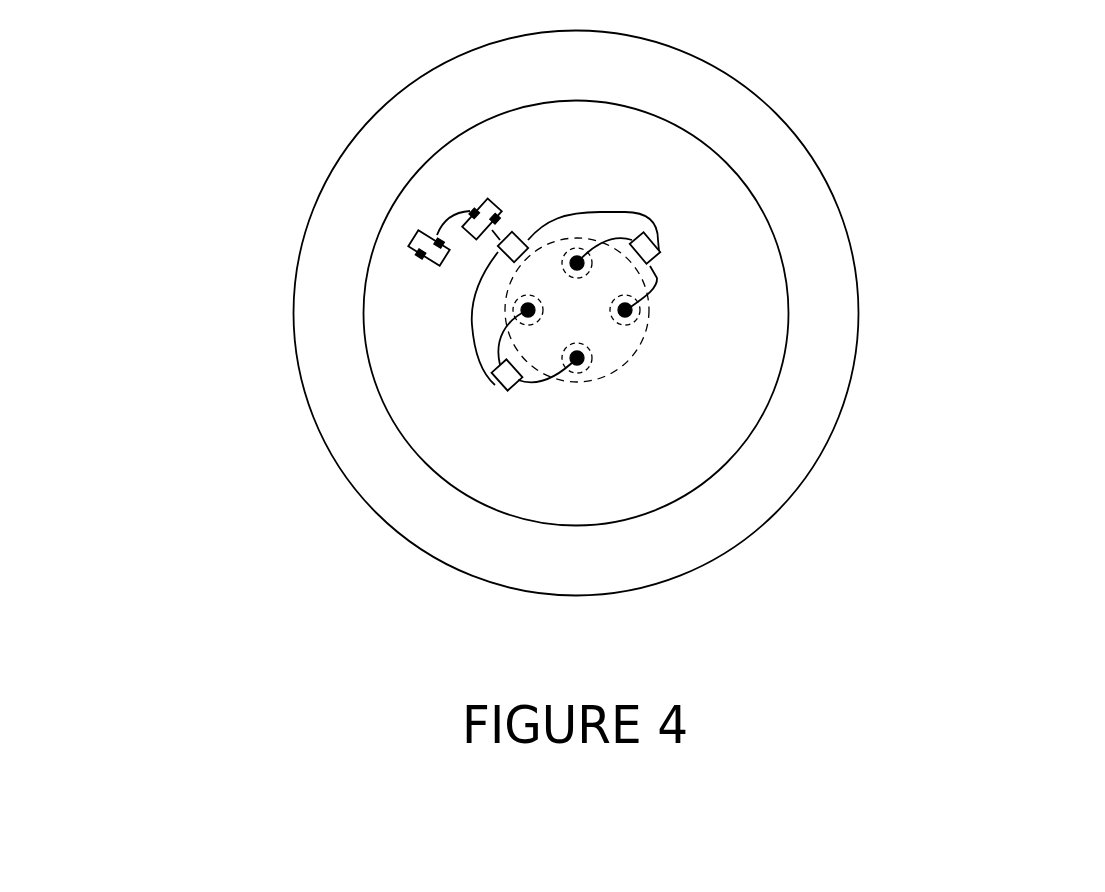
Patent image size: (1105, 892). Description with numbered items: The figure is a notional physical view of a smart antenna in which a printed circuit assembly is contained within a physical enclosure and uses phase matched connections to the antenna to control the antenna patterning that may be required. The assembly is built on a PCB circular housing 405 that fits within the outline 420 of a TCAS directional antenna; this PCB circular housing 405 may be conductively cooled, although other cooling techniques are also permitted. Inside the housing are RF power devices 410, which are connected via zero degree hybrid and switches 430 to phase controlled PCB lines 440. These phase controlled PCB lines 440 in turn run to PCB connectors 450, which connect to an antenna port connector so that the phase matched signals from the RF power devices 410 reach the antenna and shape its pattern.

The PCB circular housing 405 is at (457, 493).
The RF power devices 410 is at (467, 196).
The outline of TCAS directional antenna 420 is at (298, 260).
The zero degree hybrid and switches 430 is at (670, 242).
The phase controlled PCB lines 440 is at (677, 297).
The PCB connectors 450 is at (577, 358).